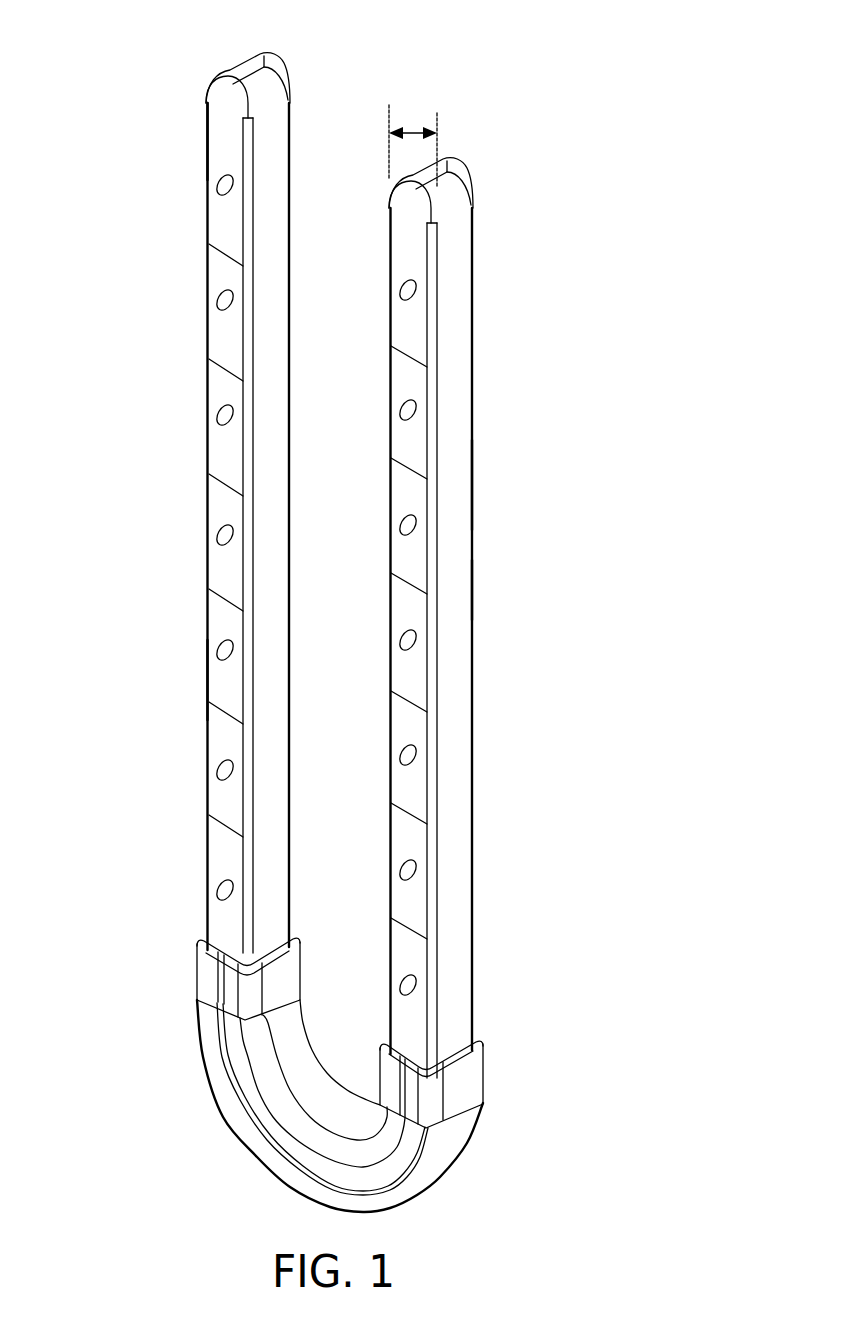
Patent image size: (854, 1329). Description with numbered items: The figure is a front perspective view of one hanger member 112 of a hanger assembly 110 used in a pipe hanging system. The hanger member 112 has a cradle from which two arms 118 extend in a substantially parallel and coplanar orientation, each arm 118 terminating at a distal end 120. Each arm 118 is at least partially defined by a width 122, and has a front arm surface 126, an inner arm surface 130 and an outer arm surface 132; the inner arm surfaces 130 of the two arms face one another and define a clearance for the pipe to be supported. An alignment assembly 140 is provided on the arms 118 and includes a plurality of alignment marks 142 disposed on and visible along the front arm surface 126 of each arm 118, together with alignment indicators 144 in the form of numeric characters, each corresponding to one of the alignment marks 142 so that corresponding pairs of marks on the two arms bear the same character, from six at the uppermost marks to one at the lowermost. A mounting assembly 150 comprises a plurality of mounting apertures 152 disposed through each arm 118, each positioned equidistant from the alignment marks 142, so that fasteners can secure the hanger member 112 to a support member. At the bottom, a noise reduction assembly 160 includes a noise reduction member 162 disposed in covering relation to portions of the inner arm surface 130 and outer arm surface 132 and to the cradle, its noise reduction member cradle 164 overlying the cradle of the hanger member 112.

The hanger assembly 110 is at (562, 55).
The hanger member 112 is at (470, 486).
The arm 118 is at (208, 682).
The distal end 120 is at (252, 78).
The width 122 is at (413, 133).
The front arm surface 126 is at (223, 108).
The inner arm surface 130 is at (272, 208).
The outer arm surface 132 is at (458, 318).
The alignment assembly 140 is at (160, 440).
The alignment marks 142 is at (240, 374).
The alignment indicators 144 is at (240, 352).
The mounting assembly 150 is at (568, 986).
The mounting aperture 152 is at (213, 306).
The noise reduction assembly 160 is at (252, 1172).
The noise reduction member 162 is at (438, 1163).
The noise reduction member cradle 164 is at (320, 1103).